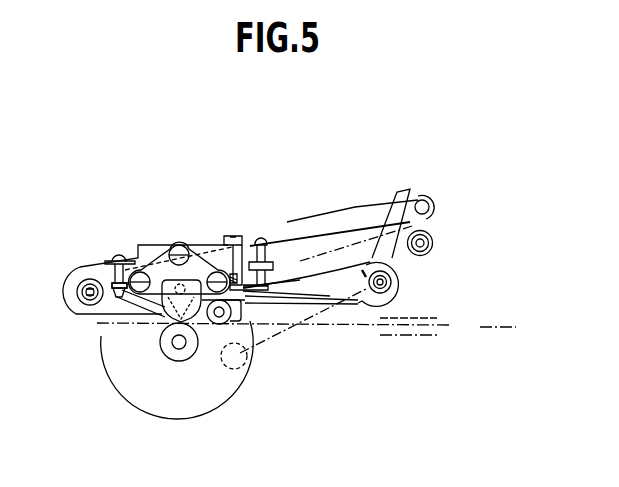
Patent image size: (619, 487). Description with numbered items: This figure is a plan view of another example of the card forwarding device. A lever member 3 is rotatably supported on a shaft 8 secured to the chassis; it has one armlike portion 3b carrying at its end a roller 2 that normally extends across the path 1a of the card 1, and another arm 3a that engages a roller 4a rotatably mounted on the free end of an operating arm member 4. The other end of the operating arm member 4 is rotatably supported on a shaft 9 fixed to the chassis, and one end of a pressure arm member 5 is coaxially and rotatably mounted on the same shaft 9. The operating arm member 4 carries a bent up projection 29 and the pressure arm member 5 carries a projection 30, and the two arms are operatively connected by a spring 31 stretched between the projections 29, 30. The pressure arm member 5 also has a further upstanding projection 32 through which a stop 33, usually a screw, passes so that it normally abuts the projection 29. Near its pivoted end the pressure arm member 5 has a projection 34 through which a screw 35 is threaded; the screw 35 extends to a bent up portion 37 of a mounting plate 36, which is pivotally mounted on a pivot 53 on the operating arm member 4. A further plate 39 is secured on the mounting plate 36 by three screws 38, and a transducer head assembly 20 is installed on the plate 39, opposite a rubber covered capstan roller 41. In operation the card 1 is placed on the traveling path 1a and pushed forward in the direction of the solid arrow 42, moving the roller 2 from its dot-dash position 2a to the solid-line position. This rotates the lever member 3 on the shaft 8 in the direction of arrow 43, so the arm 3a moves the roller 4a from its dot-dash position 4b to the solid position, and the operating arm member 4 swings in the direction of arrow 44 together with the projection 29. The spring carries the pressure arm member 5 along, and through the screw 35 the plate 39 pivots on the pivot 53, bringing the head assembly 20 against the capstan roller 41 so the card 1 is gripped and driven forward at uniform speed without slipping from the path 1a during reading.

The card 1 is at (430, 325).
The path 1a is at (408, 336).
The roller 2 is at (213, 324).
The position 2a is at (244, 363).
The lever member 3 is at (365, 290).
The arm 3a is at (430, 203).
The armlike portion 3b is at (268, 292).
The operating arm member 4 is at (345, 236).
The roller 4a is at (433, 242).
The position 4b is at (382, 262).
The pressure arm member 5 is at (82, 270).
The shaft 8 is at (391, 283).
The shaft 9 is at (87, 296).
The transducer head assembly 20 is at (180, 292).
The bent up projection 29 is at (280, 298).
The projection 30 is at (236, 258).
The spring 31 is at (231, 250).
The bolt shank 32 is at (270, 258).
The stop 33 is at (261, 240).
The projection 34 is at (113, 260).
The screw 35 is at (120, 258).
The mounting plate 36 is at (143, 311).
The bent up portion 37 is at (120, 289).
The screws 38 is at (179, 245).
The plate 39 is at (200, 268).
The capstan roller 41 is at (168, 356).
The arrow 42 is at (490, 328).
The arrow 43 is at (364, 278).
The arrow 44 is at (318, 215).
The pivot 53 is at (158, 327).